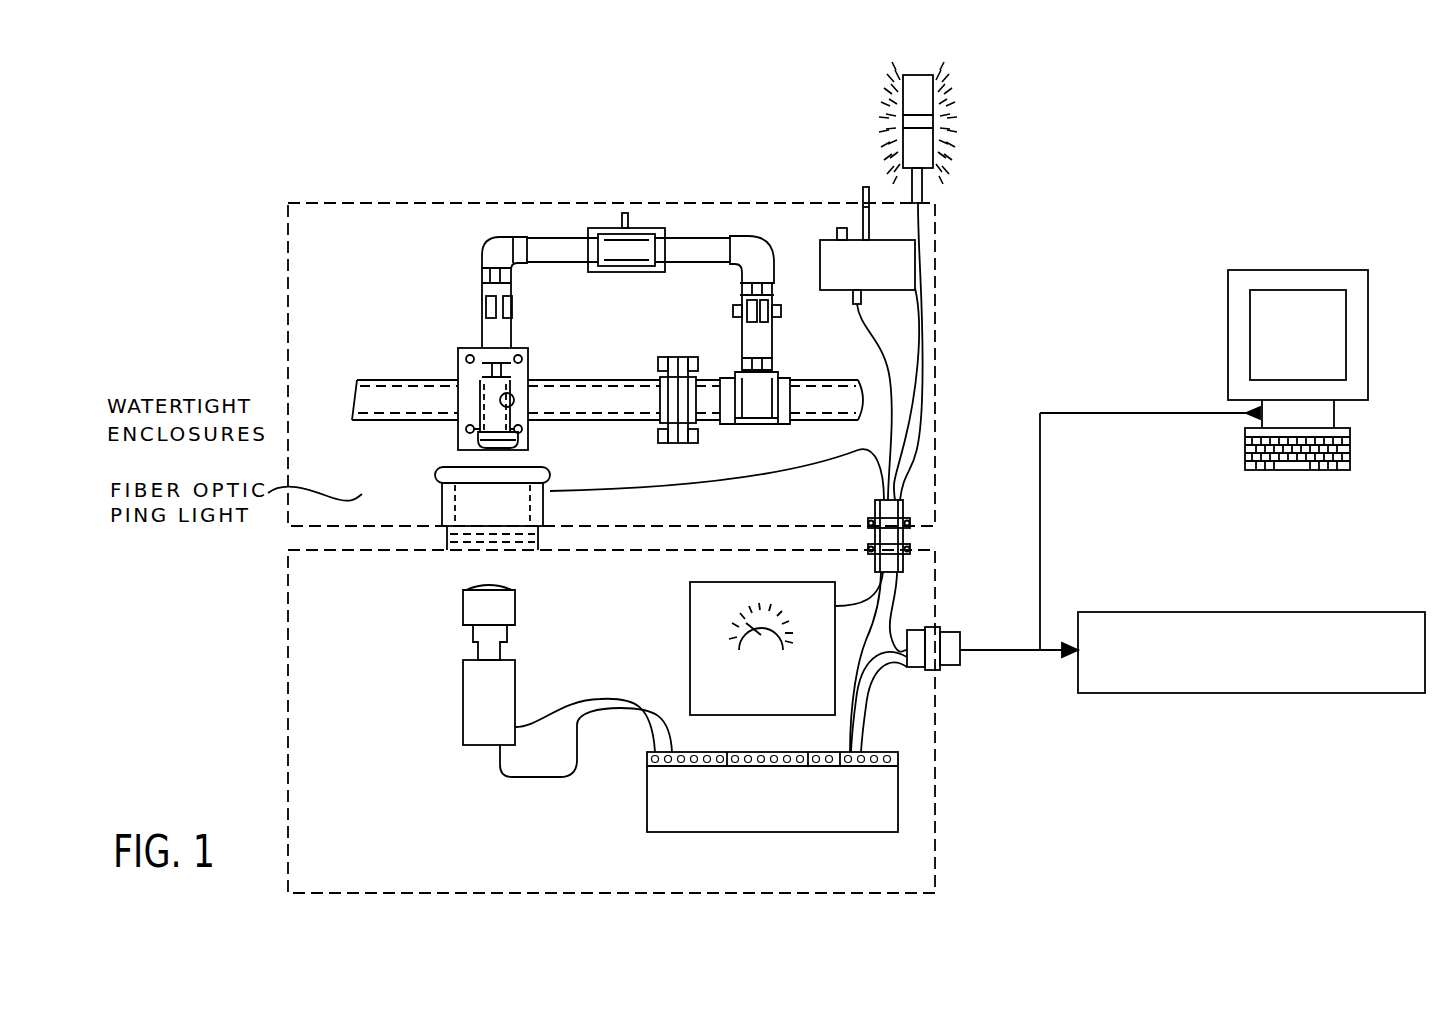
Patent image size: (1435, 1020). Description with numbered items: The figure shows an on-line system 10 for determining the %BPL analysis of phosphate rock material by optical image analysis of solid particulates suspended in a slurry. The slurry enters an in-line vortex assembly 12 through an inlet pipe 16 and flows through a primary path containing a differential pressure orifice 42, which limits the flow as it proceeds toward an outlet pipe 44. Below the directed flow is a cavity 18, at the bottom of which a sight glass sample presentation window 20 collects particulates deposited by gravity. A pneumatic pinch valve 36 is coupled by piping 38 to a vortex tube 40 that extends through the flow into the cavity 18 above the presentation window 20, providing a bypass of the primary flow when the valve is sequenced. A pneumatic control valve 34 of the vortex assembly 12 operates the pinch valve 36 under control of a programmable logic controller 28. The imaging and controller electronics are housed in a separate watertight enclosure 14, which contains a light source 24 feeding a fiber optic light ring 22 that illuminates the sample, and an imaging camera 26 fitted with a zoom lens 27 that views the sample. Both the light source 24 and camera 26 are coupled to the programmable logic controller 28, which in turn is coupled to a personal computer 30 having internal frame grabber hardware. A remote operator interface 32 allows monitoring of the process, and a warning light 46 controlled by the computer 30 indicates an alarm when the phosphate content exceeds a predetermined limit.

The on-line system 10 is at (1010, 276).
The in-line vortex assembly 12 is at (288, 255).
The watertight enclosure 14 is at (288, 620).
The inlet pipe 16 is at (411, 380).
The cavity 18 is at (458, 433).
The sample presentation window 20 is at (500, 455).
The fiber optic light ring 22 is at (551, 474).
The light source 24 is at (690, 601).
The imaging camera 26 is at (516, 684).
The zoom lens 27 is at (516, 612).
The programmable logic controller 28 is at (647, 784).
The personal computer 30 is at (1130, 612).
The remote operator interface 32 is at (1228, 325).
The pneumatic control valve 34 is at (833, 291).
The pneumatic pinch valve 36 is at (596, 272).
The piping 38 is at (483, 246).
The vortex tube 40 is at (514, 397).
The differential pressure orifice 42 is at (676, 443).
The outlet pipe 44 is at (813, 421).
The warning light 46 is at (923, 183).